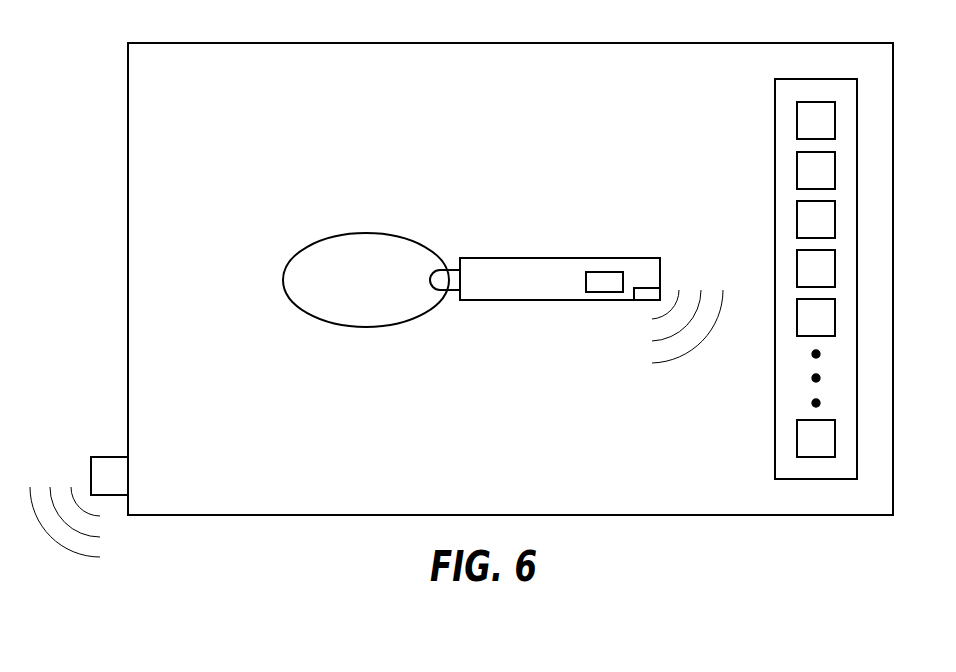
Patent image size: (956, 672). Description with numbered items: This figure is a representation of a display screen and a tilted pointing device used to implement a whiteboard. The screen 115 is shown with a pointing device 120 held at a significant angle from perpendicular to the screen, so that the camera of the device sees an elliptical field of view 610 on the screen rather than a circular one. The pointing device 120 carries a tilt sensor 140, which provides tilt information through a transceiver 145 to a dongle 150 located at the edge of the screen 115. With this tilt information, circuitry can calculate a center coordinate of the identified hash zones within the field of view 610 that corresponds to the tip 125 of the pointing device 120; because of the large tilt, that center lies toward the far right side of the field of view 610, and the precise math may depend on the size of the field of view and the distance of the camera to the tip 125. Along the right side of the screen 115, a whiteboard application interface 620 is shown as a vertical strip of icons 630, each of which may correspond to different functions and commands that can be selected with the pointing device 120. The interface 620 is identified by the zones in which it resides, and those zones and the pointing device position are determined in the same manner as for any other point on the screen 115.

The screen 115 is at (510, 43).
The pointing device 120 is at (520, 258).
The tip 125 is at (432, 281).
The tilt sensor 140 is at (606, 272).
The transceiver 145 is at (652, 292).
The dongle 150 is at (108, 457).
The elliptical field of view 610 is at (368, 234).
The whiteboard application interface 620 is at (775, 174).
The icons 630 is at (797, 120).